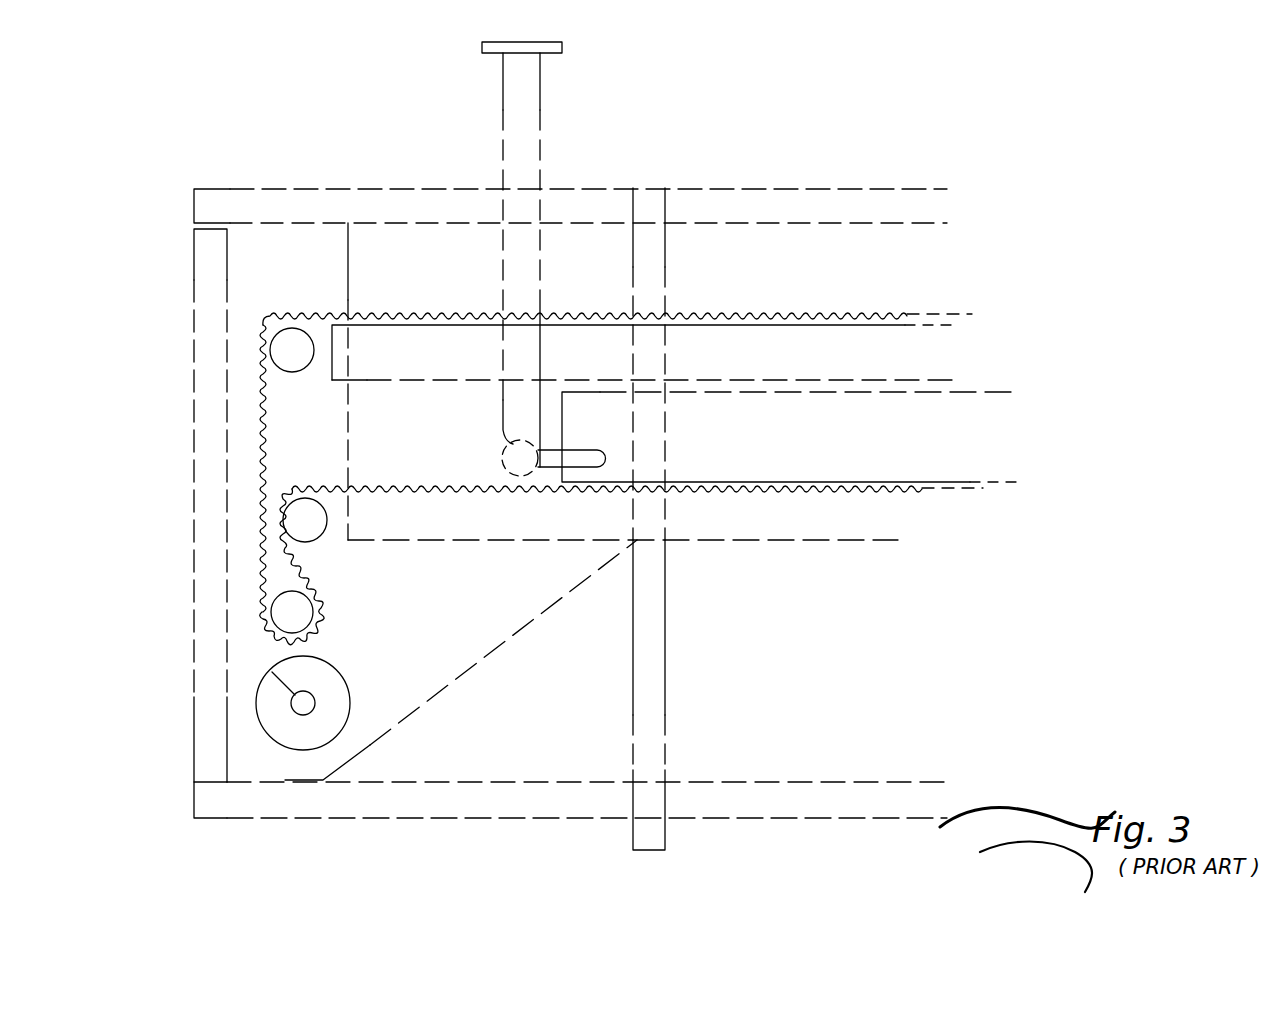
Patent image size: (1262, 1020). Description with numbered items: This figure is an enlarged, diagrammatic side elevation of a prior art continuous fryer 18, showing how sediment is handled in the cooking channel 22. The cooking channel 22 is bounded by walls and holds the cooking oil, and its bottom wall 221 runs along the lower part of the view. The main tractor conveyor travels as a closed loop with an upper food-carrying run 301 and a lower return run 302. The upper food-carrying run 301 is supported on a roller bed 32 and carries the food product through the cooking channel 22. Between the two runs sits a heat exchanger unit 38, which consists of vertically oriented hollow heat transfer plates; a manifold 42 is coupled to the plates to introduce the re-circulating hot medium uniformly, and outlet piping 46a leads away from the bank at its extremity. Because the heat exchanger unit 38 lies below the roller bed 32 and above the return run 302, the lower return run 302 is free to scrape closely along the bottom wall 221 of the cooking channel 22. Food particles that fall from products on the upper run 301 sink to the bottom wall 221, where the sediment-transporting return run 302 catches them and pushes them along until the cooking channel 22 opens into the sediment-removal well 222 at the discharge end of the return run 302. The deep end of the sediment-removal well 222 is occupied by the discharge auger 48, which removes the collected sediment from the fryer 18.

The fryer 18 is at (313, 148).
The outlet piping 46a is at (543, 118).
The upper food-carrying run 301 is at (437, 311).
The cooking channel 22 is at (751, 286).
The roller bed 32 is at (423, 380).
The manifold 42 is at (513, 440).
The heat exchanger unit 38 is at (718, 392).
The lower return run 302 is at (395, 488).
The bottom wall 221 is at (703, 541).
The discharge auger 48 is at (330, 684).
The sediment-removal well 222 is at (487, 655).